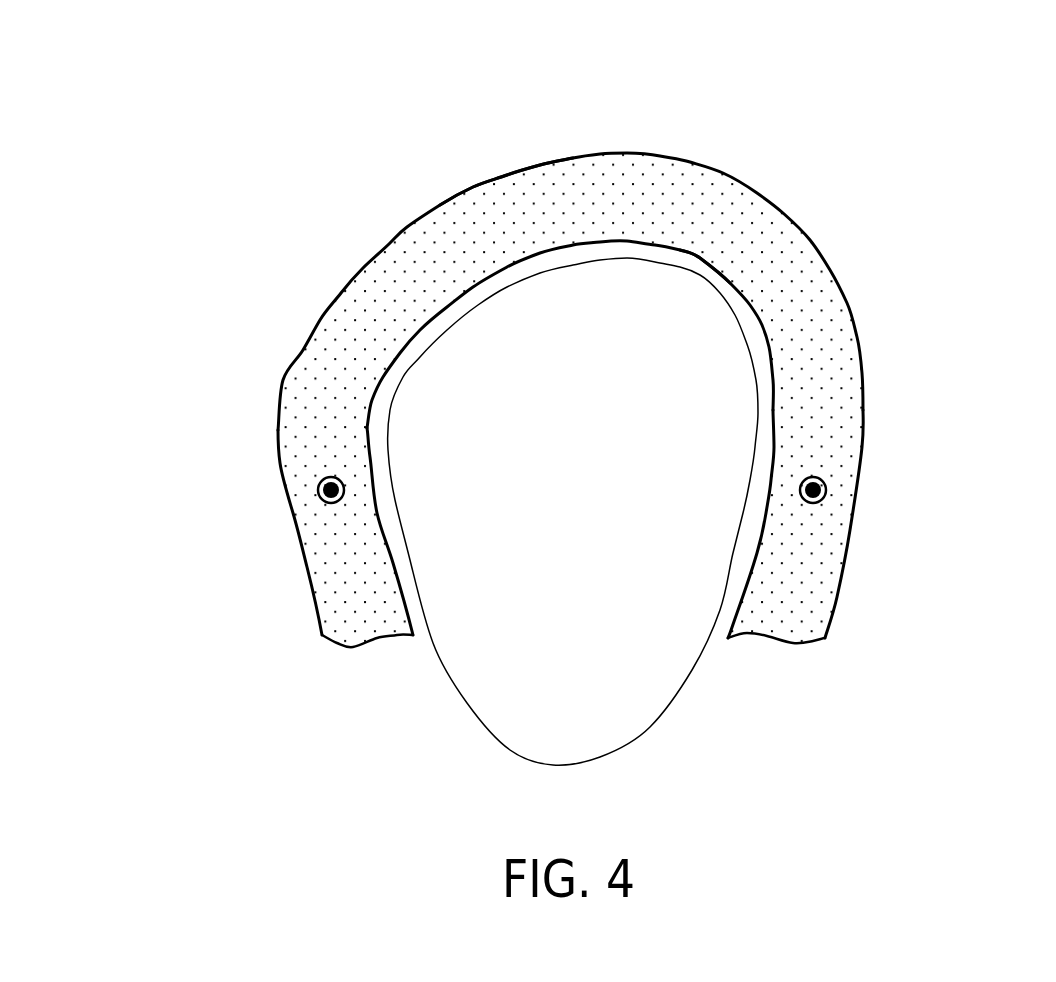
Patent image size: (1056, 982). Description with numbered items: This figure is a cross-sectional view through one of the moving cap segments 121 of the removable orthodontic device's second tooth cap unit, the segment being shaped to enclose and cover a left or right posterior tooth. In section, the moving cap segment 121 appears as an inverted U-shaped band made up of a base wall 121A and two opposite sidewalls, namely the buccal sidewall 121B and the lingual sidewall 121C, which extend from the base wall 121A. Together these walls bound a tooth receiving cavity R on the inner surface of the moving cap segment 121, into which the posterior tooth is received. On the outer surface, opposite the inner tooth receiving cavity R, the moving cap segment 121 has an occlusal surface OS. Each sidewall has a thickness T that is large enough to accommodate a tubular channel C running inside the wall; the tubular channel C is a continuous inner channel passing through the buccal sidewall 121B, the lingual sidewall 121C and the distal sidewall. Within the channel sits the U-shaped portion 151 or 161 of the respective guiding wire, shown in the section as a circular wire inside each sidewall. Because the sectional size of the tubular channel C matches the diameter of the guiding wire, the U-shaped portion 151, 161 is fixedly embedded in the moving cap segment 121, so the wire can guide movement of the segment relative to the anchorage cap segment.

The moving cap segment 121 is at (569, 393).
The base wall 121A is at (627, 190).
The buccal sidewall 121B is at (830, 372).
The lingual sidewall 121C is at (340, 582).
The occlusal surface OS is at (507, 172).
The tooth receiving cavity R is at (717, 275).
The thickness T is at (366, 428).
The tubular channel C is at (826, 482).
The U-shaped portion 151 is at (826, 498).
The U-shaped portion 161 is at (331, 490).